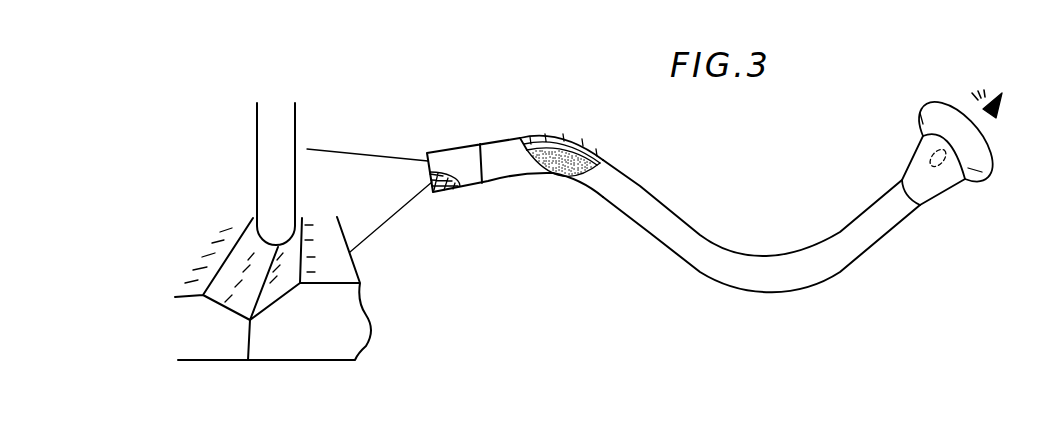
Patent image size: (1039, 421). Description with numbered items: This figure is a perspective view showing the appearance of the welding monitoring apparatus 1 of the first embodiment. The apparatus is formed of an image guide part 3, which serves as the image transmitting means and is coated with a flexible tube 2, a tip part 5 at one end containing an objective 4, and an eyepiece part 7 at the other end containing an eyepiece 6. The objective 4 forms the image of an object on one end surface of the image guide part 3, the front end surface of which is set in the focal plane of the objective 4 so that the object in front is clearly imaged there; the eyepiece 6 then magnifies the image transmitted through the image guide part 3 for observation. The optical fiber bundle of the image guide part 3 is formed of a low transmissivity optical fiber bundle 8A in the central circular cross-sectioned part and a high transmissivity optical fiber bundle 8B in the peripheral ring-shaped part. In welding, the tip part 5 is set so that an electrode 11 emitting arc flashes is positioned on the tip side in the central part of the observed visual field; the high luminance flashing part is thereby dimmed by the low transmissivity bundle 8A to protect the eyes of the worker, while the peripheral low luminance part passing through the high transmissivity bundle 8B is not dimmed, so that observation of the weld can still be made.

The welding monitoring apparatus 1 is at (760, 291).
The flexible tube 2 is at (590, 152).
The image guide part 3 is at (560, 135).
The objective 4 is at (445, 188).
The tip part 5 is at (479, 184).
The eyepiece 6 is at (945, 170).
The eyepiece part 7 is at (900, 161).
The low transmissivity optical fiber bundle 8A is at (567, 175).
The high transmissivity optical fiber bundle 8B is at (538, 147).
The electrode 11 is at (268, 141).